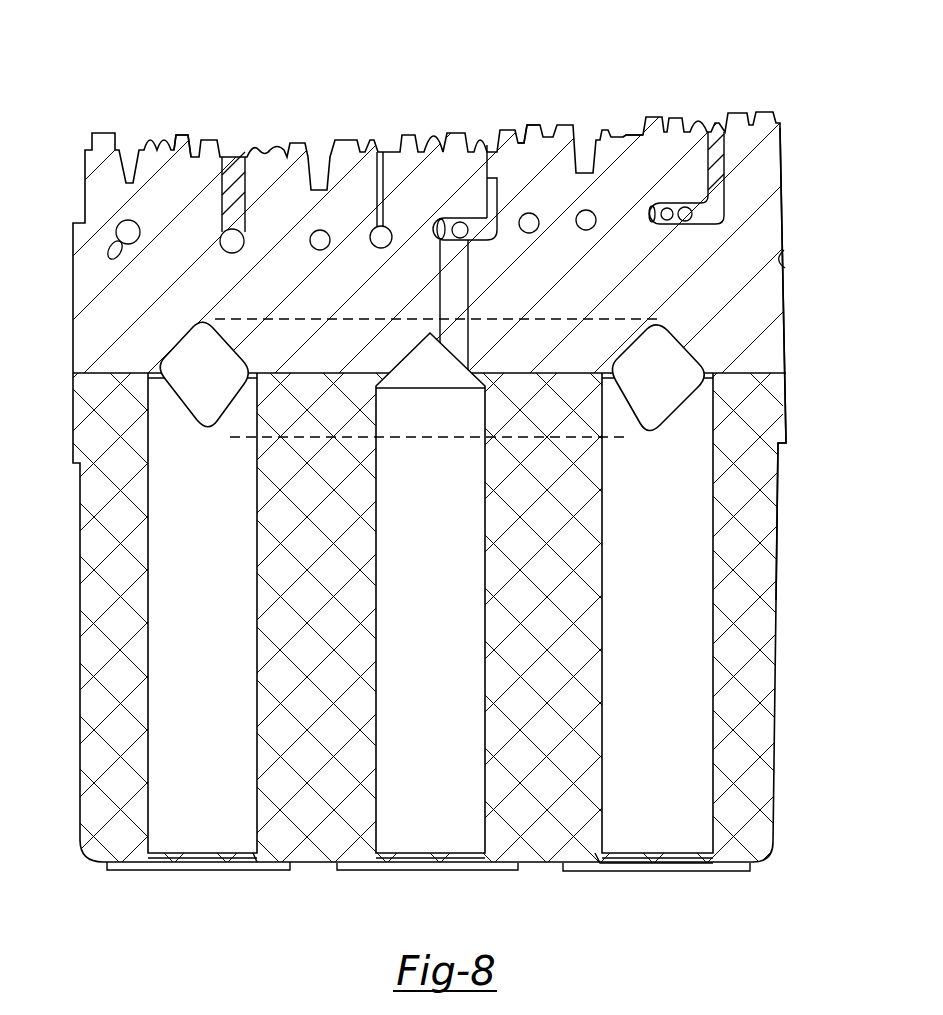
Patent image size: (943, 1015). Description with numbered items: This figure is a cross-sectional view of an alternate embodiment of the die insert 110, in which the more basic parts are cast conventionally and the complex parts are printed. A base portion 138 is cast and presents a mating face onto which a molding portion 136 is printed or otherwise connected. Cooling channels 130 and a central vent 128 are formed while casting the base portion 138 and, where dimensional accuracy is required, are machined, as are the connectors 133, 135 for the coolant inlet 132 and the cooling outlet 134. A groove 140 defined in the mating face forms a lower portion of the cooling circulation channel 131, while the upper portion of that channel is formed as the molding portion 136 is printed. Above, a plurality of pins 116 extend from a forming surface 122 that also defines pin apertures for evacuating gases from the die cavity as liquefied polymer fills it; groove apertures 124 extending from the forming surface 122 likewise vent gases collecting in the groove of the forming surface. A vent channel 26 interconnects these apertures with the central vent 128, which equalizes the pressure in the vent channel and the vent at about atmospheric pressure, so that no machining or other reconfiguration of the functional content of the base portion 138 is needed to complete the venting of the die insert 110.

The die insert 110 is at (115, 58).
The pins 116 is at (188, 133).
The forming surface 122 is at (282, 155).
The groove apertures 124 is at (378, 152).
The vent channel 26 is at (458, 300).
The cooling circulation channel 131 is at (258, 319).
The molding portion 136 is at (785, 295).
The base portion 138 is at (147, 458).
The groove 140 is at (206, 418).
The vent 128 is at (438, 606).
The cooling channels 130 is at (208, 606).
The coolant inlet 132 is at (172, 887).
The connector 133 is at (257, 862).
The cooling outlet 134 is at (670, 893).
The connector 135 is at (598, 860).